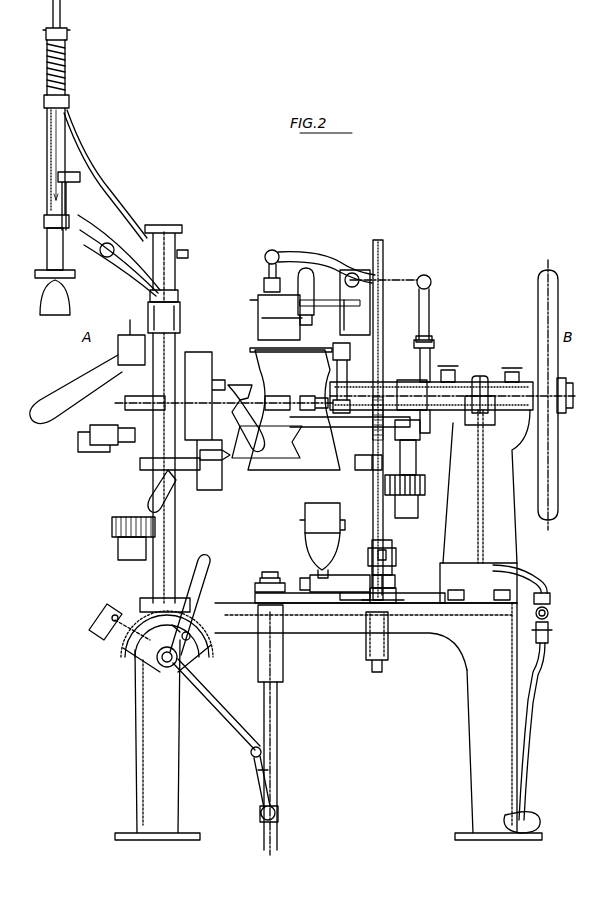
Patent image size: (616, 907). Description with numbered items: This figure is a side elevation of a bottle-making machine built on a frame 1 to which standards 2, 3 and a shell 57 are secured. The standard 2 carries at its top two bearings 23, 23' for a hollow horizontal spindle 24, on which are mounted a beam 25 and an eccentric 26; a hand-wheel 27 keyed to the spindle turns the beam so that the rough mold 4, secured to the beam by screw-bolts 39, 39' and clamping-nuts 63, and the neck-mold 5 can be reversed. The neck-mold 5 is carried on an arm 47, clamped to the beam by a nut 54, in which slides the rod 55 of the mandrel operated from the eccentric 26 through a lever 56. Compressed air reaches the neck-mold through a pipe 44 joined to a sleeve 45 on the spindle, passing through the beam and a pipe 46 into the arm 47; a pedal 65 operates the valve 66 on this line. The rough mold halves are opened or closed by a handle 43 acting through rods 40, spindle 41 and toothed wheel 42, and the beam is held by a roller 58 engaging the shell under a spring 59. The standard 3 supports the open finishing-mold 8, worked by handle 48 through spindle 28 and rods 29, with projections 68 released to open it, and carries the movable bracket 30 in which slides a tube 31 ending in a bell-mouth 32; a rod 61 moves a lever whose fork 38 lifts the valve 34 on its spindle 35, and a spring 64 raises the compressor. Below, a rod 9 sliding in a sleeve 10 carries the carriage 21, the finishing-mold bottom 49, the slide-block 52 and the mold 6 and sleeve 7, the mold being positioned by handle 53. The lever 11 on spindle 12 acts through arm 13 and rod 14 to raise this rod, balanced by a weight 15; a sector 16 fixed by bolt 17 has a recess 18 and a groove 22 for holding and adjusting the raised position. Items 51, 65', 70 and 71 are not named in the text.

The frame 1 is at (138, 748).
The standard 2 is at (485, 506).
The standard 3 is at (152, 578).
The rough mold 4 is at (255, 368).
The neck-mold 5 is at (258, 325).
The mold 6 is at (310, 542).
The sleeve 7 is at (305, 510).
The finishing-mold 8 is at (205, 500).
The rod 9 is at (278, 730).
The sleeve 10 is at (283, 670).
The lever 11 is at (203, 562).
The spindle 12 is at (167, 667).
The arm 13 is at (230, 712).
The rod 14 is at (262, 790).
The weight 15 is at (103, 608).
The sector 16 is at (208, 628).
The bolt 17 is at (193, 642).
The recess 18 is at (104, 636).
The carriage 21 is at (260, 596).
The groove 22 is at (140, 657).
The bearing 23 is at (452, 378).
The bearing 23' is at (488, 363).
The spindle 24 is at (560, 412).
The beam 25 is at (384, 265).
The eccentric 26 is at (434, 345).
The hand-wheel 27 is at (558, 362).
The spindle 28 is at (125, 403).
The rod 29 is at (78, 440).
The movable bracket 30 is at (125, 192).
The tube 31 is at (50, 155).
The bell-mouth 32 is at (40, 308).
The valve 34 is at (182, 325).
The spindle 35 is at (178, 282).
The fork 38 is at (180, 298).
The screw-bolt 39 is at (350, 371).
The screw-bolt 39' is at (357, 447).
The rod 40 is at (420, 432).
The spindle 41 is at (416, 465).
The toothed wheel 42 is at (425, 487).
The handle 43 is at (321, 427).
The pipe 44 is at (528, 575).
The sleeve 45 is at (480, 374).
The pipe 46 is at (365, 318).
The arm 47 is at (320, 322).
The handle 48 is at (70, 398).
The bottom 49 is at (270, 578).
The gear 51 is at (112, 527).
The slide-block 52 is at (310, 582).
The handle 53 is at (392, 580).
The nut 54 is at (390, 320).
The rod 55 is at (262, 272).
The lever 56 is at (305, 258).
The shell 57 is at (396, 596).
The roller 58 is at (392, 552).
The spring 59 is at (388, 645).
The rod 61 is at (80, 190).
The clamping-nut 63 is at (388, 419).
The spring 64 is at (67, 60).
The pedal 65 is at (494, 820).
The collar 65' is at (413, 385).
The valve 66 is at (549, 616).
The projection 68 is at (238, 466).
The lever 70 is at (148, 505).
The handle 71 is at (320, 298).